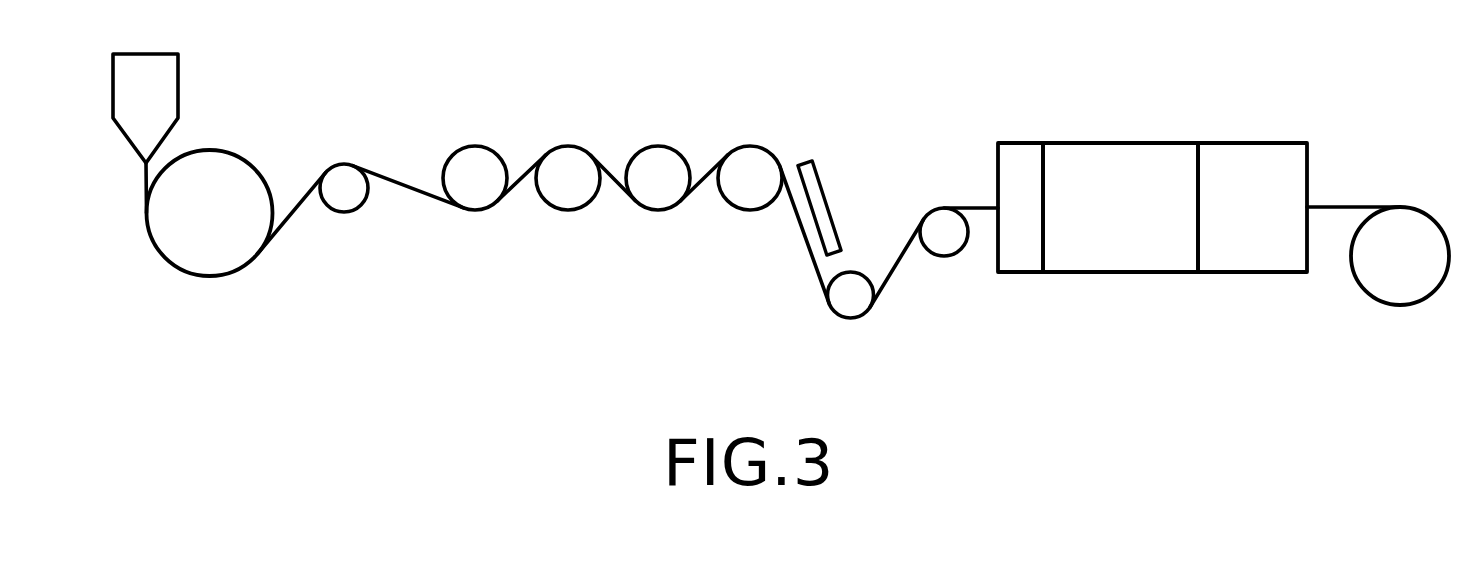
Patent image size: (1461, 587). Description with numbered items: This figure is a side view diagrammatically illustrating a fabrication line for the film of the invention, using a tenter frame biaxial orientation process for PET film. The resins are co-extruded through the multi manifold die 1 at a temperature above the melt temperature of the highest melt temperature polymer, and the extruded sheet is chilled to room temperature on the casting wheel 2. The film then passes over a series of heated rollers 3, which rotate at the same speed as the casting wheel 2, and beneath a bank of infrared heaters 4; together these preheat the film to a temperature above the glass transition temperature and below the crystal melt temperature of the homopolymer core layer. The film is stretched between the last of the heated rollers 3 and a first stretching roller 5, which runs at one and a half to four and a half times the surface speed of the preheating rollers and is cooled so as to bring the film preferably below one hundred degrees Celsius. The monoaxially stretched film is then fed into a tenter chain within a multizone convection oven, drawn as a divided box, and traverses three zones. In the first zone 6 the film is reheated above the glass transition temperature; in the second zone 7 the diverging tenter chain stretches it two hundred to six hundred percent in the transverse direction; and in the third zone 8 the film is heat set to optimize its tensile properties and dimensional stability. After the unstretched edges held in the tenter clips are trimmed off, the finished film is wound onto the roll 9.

The multi manifold die 1 is at (156, 99).
The casting wheel 2 is at (199, 217).
The heated rollers 3 is at (473, 112).
The bank of infrared heaters 4 is at (828, 212).
The first stretching roller 5 is at (939, 247).
The first zone 6 is at (1009, 217).
The second zone 7 is at (1097, 217).
The third zone 8 is at (1230, 217).
The roll 9 is at (1390, 271).